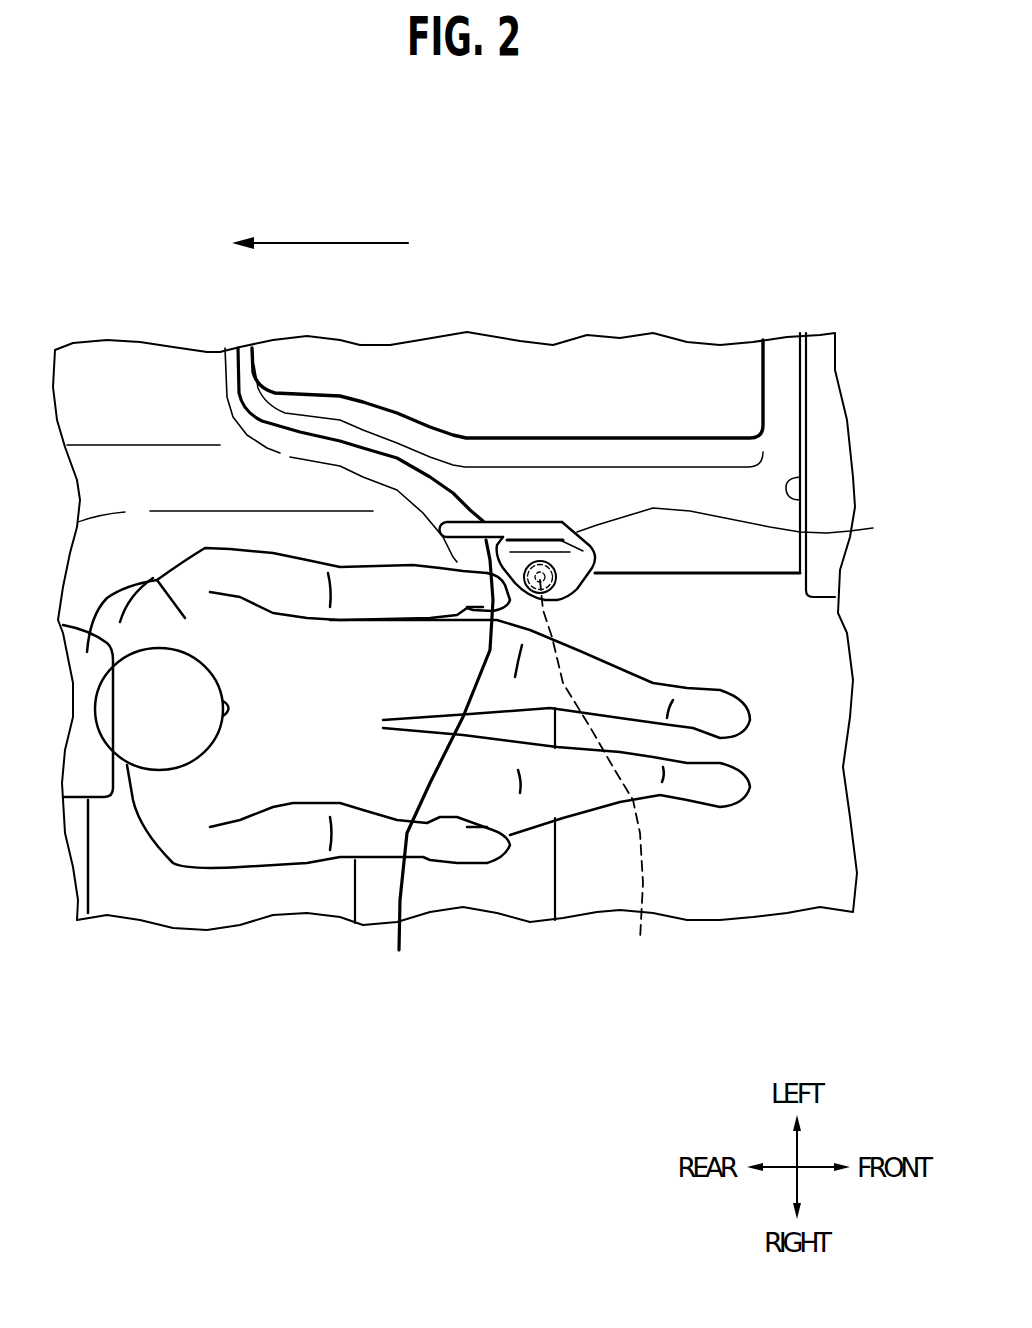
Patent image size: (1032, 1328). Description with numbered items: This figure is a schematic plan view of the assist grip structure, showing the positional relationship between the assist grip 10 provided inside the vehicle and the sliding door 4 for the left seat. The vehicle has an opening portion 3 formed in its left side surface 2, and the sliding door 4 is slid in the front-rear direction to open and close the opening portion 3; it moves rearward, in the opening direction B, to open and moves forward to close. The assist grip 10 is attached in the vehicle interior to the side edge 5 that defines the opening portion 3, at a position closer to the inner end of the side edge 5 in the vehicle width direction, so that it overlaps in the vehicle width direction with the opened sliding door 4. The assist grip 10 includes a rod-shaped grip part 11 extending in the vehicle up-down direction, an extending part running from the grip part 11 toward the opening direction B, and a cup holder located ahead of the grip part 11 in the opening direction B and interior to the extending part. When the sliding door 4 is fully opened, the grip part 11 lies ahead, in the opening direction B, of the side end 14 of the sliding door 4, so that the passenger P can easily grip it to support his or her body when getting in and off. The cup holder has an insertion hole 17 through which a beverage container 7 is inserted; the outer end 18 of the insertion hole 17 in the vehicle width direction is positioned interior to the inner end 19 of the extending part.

The side surface 2 is at (156, 380).
The opening portion 3 is at (805, 498).
The sliding door 4 is at (783, 363).
The side edge 5 is at (457, 512).
The beverage container 7 is at (595, 780).
The assist grip 10 is at (585, 507).
The grip part 11 is at (741, 526).
The side end 14 is at (805, 395).
The insertion hole 17 is at (545, 565).
The outer end 18 is at (531, 560).
The inner end 19 is at (365, 667).
The passenger P is at (145, 592).
The opening direction B is at (308, 242).